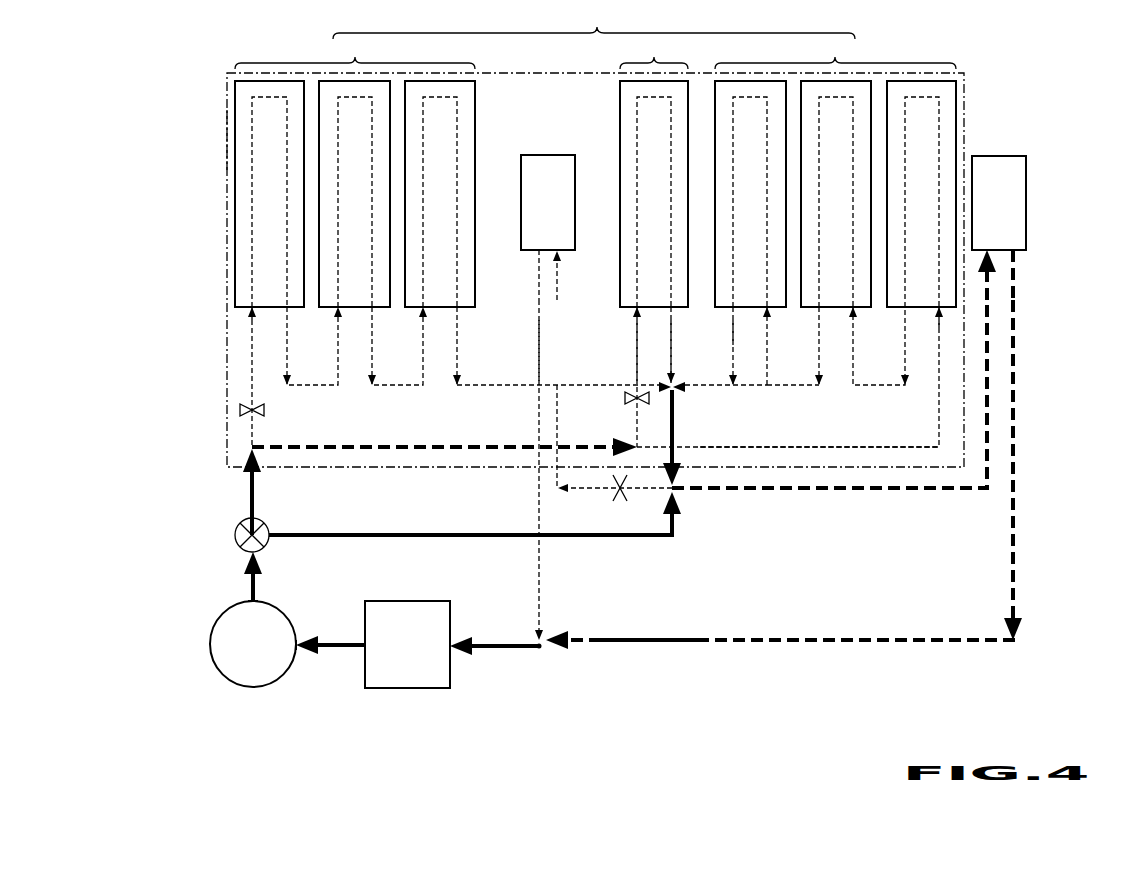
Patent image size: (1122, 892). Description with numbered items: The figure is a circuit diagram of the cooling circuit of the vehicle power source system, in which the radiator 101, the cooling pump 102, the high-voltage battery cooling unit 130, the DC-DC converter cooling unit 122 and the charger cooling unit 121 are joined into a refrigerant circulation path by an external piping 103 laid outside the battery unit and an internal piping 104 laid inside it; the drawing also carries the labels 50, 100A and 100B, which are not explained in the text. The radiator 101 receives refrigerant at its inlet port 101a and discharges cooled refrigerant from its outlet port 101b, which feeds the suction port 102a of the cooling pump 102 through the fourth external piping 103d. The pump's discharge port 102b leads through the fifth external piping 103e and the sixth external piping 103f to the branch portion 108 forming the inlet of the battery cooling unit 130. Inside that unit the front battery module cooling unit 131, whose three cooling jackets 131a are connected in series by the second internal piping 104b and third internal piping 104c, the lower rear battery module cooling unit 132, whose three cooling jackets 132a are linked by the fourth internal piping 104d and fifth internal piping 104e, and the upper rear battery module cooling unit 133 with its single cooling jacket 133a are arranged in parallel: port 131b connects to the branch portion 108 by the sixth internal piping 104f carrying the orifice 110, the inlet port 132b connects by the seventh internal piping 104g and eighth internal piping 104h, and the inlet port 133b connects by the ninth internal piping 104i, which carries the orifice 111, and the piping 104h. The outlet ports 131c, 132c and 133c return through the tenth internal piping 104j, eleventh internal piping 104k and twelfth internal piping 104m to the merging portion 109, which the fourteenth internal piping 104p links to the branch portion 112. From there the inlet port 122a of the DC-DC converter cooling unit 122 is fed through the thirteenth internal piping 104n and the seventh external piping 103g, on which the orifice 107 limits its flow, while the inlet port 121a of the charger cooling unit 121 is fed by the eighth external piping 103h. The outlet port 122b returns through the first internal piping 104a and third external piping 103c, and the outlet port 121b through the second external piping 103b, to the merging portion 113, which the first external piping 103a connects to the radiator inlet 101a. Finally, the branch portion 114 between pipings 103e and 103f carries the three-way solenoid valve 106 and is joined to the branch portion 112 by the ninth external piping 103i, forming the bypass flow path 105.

The exhaust heat recovery system enclosure 50 is at (966, 82).
The first circuit section 100A is at (232, 140).
The second circuit section 100B is at (1020, 540).
The radiator 101 is at (405, 690).
The inlet port 101a is at (452, 640).
The outlet port 101b is at (364, 640).
The cooling pump 102 is at (250, 688).
The suction port 102a is at (298, 650).
The discharge port 102b is at (250, 597).
The external piping 103 is at (625, 648).
The first external piping 103a is at (500, 650).
The second external piping 103b is at (800, 646).
The third external piping 103c is at (541, 606).
The fourth external piping 103d is at (340, 650).
The fifth external piping 103e is at (257, 590).
The sixth external piping 103f is at (256, 492).
The seventh external piping 103g is at (590, 493).
The eighth external piping 103h is at (913, 493).
The ninth external piping 103i is at (475, 536).
The bypass flow path 105 is at (408, 538).
The internal piping 104 is at (948, 402).
The first internal piping 104a is at (537, 358).
The second internal piping 104b is at (312, 388).
The third internal piping 104c is at (395, 388).
The fourth internal piping 104d is at (876, 388).
The fifth internal piping 104e is at (788, 388).
The sixth internal piping 104f is at (250, 373).
The seventh internal piping 104g is at (838, 450).
The eighth internal piping 104h is at (418, 453).
The ninth internal piping 104i is at (663, 357).
The tenth internal piping 104j is at (488, 388).
The eleventh internal piping 104k is at (733, 392).
The twelfth internal piping 104m is at (660, 368).
The thirteenth internal piping 104n is at (551, 363).
The fourteenth internal piping 104p is at (676, 462).
The three-way solenoid valve 106 is at (191, 535).
The branch portion 114 is at (235, 535).
The orifice 107 is at (622, 507).
The branch portion 108 is at (243, 448).
The merging portion 109 is at (677, 391).
The orifice 110 is at (240, 410).
The orifice 111 is at (624, 400).
The branch portion 112 is at (675, 520).
The merging portion 113 is at (539, 650).
The charger cooling unit 121 is at (1027, 176).
The inlet port 121a is at (990, 252).
The outlet port 121b is at (1016, 258).
The DC-DC converter cooling unit 122 is at (541, 154).
The inlet port 122a is at (562, 258).
The outlet port 122b is at (536, 258).
The high-voltage battery cooling unit 130 is at (594, 21).
The front battery module cooling unit 131 is at (355, 171).
The cooling jacket 131a is at (405, 178).
The outlet port 131b is at (248, 312).
The outlet port 131c is at (463, 313).
The lower rear battery module cooling unit 132 is at (835, 171).
The cooling jacket 132a is at (956, 140).
The inlet port 132b is at (942, 312).
The outlet port 132c is at (735, 320).
The upper rear battery module cooling unit 133 is at (654, 171).
The cooling jacket 133a is at (620, 106).
The inlet port 133b is at (635, 313).
The outlet port 133c is at (676, 313).